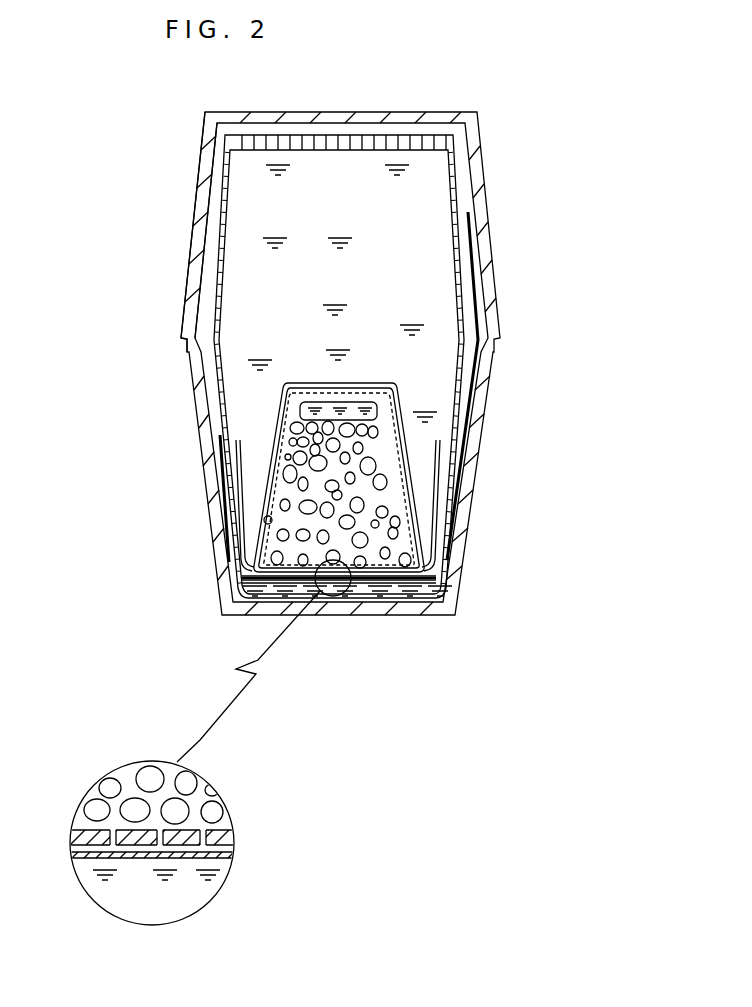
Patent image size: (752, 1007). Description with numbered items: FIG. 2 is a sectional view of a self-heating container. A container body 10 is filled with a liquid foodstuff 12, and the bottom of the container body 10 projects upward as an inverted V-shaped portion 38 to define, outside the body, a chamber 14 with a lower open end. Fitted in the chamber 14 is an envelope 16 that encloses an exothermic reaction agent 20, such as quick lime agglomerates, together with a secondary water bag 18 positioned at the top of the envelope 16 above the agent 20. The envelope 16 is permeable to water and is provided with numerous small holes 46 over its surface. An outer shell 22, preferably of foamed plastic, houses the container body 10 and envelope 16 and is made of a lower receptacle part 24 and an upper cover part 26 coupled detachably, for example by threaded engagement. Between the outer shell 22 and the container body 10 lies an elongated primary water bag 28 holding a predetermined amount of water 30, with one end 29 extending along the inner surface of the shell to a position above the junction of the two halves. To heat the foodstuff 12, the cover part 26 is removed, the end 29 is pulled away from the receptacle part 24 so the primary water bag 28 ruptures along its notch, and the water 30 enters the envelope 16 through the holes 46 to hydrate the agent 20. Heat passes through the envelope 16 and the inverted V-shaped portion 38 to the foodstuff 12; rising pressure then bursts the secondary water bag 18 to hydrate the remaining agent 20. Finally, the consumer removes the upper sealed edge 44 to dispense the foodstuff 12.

The container body 10 is at (470, 256).
The liquid foodstuff 12 is at (428, 210).
The chamber 14 is at (402, 386).
The envelope 16 is at (445, 582).
The secondary water bag 18 is at (408, 396).
The exothermic reaction agent 20 is at (387, 481).
The outer shell 22 is at (174, 362).
The receptacle part 24 is at (218, 437).
The cover part 26 is at (203, 240).
The primary water bag 28 is at (438, 586).
The one end of primary bag 29 is at (478, 279).
The water 30 is at (410, 596).
The inverted V-shaped portion 38 is at (298, 382).
The upper sealed edge 44 is at (398, 140).
The small holes 46 is at (208, 838).